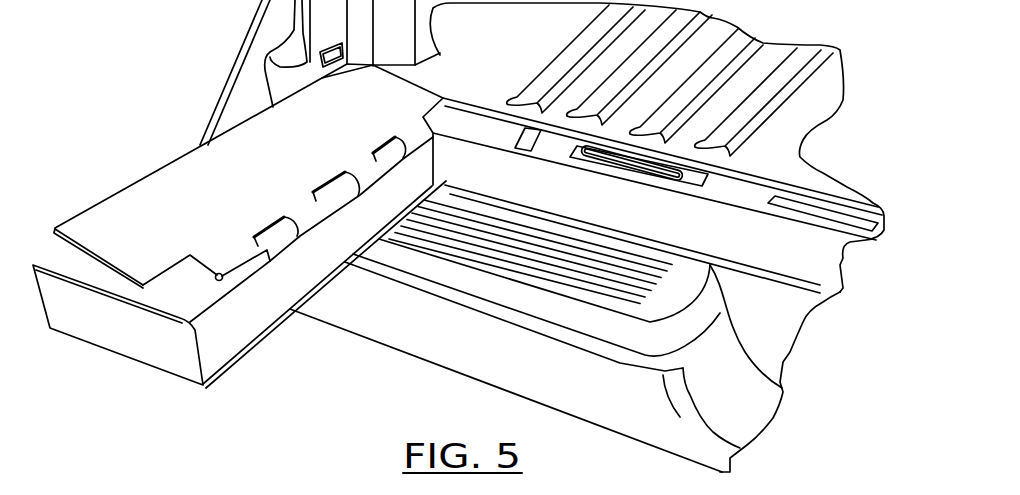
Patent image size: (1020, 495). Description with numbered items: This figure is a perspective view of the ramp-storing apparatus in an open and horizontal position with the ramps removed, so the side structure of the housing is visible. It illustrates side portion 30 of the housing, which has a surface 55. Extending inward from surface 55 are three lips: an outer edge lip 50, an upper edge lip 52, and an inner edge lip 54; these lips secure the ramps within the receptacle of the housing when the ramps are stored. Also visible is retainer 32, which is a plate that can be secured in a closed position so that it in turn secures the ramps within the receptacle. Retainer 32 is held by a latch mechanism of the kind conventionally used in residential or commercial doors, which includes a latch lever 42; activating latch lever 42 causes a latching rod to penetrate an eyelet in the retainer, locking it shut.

The side portion 30 is at (120, 328).
The retainer 32 is at (190, 186).
The latch lever 42 is at (630, 160).
The outer edge lip 50 is at (338, 243).
The upper edge lip 52 is at (233, 360).
The inner edge lip 54 is at (213, 282).
The surface 55 is at (337, 237).